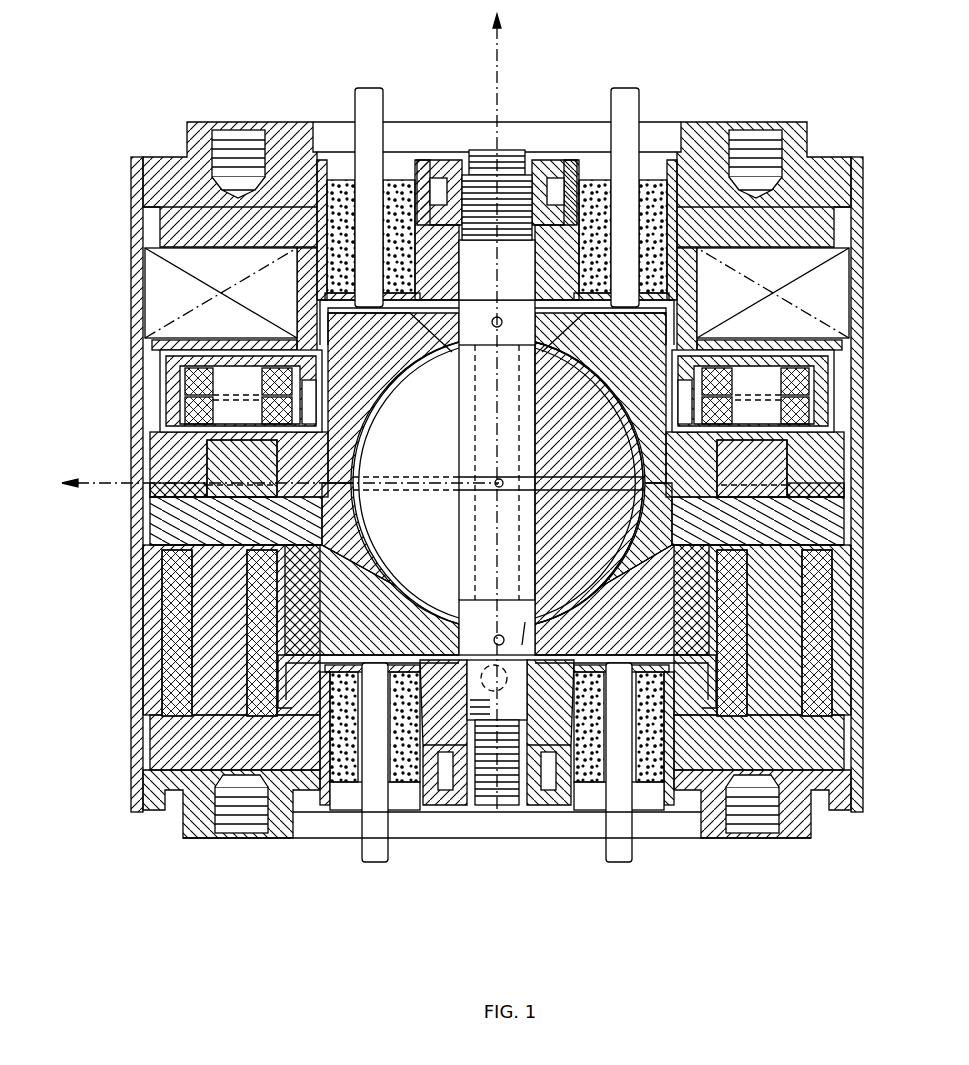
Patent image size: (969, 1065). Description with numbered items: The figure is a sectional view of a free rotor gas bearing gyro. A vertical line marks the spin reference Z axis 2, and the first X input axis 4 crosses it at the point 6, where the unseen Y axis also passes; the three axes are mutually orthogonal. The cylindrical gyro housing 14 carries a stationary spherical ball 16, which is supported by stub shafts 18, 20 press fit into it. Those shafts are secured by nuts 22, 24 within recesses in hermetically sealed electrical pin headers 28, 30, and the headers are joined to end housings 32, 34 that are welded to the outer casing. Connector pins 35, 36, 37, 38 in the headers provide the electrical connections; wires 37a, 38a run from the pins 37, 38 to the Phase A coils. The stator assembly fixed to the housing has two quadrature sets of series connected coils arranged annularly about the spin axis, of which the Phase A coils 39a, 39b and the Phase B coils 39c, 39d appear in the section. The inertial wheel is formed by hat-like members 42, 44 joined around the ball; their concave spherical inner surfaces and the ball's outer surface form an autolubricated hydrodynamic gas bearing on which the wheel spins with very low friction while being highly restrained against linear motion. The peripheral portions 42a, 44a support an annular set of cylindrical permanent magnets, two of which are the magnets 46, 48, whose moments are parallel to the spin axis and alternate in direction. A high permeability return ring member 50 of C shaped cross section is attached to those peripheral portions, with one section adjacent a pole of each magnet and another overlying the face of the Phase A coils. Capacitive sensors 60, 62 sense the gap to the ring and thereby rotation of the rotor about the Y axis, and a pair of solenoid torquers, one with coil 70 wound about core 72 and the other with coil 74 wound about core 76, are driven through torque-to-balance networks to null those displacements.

The spin reference (Z) axis 2 is at (500, 57).
The first (X) input axis 4 is at (132, 480).
The intersection point 6 is at (503, 487).
The gyro housing 14 is at (862, 197).
The spherical ball 16 is at (410, 445).
The stub shaft 18 is at (503, 280).
The stub shaft 20 is at (467, 649).
The nut 22 is at (540, 790).
The nut 24 is at (537, 165).
The electrical pin header 28 is at (330, 229).
The electrical pin header 30 is at (334, 734).
The end housing 32 is at (325, 840).
The end housing 34 is at (350, 123).
The pin 35 is at (390, 856).
The pin 36 is at (642, 856).
The pin 37 is at (385, 106).
The wire 37a is at (322, 343).
The pin 38 is at (641, 106).
The wire 38a is at (676, 343).
The Phase A coil 39a is at (200, 384).
The Phase A coil 39b is at (798, 386).
The Phase B coil 39c is at (200, 410).
The Phase B coil 39d is at (798, 412).
The hat-like member 42 is at (330, 548).
The peripheral portion 42a is at (172, 492).
The hat-like member 44 is at (313, 471).
The peripheral portion 44a is at (185, 457).
The permanent magnet 46 is at (228, 471).
The permanent magnet 48 is at (747, 471).
The return ring member 50 is at (182, 541).
The capacitive sensor 60 is at (163, 303).
The capacitive sensor 62 is at (817, 303).
The coil 70 is at (165, 603).
The core 72 is at (220, 670).
The coil 74 is at (694, 612).
The core 76 is at (775, 677).